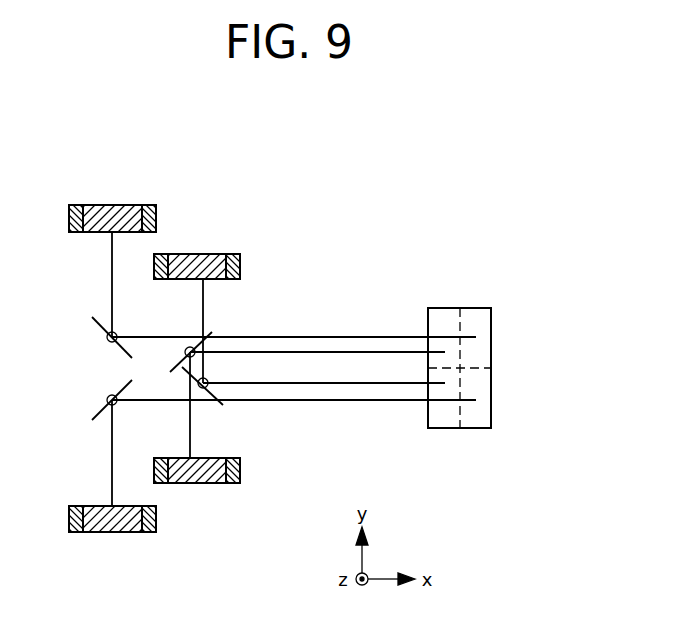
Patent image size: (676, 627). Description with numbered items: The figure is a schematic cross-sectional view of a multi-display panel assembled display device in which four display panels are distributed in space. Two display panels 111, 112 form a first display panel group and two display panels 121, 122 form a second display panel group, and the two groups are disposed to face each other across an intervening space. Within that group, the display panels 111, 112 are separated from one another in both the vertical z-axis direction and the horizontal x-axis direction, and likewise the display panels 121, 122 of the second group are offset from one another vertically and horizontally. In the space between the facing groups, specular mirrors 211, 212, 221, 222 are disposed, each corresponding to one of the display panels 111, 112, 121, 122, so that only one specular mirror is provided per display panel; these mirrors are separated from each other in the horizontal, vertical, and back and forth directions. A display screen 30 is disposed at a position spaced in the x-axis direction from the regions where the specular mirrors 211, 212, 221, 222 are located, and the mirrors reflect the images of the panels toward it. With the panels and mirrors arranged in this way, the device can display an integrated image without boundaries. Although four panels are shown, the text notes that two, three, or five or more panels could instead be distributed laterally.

The display panel 111 is at (112, 203).
The display panel 112 is at (196, 252).
The display panel 121 is at (112, 533).
The display panel 122 is at (196, 485).
The specular mirror 211 is at (92, 318).
The specular mirror 221 is at (92, 420).
The specular mirror 222 is at (212, 344).
The specular mirror 212 is at (222, 395).
The display screen 30 is at (492, 323).